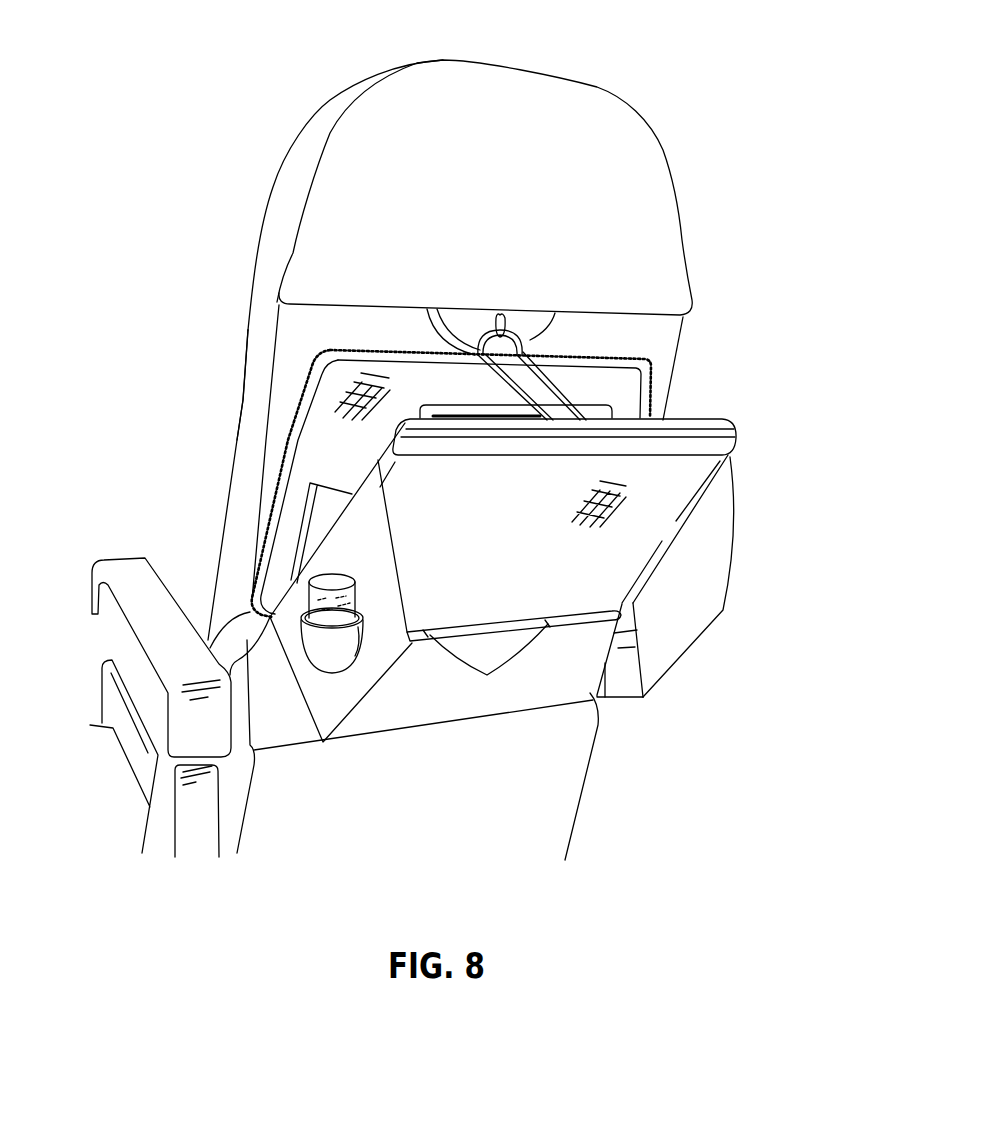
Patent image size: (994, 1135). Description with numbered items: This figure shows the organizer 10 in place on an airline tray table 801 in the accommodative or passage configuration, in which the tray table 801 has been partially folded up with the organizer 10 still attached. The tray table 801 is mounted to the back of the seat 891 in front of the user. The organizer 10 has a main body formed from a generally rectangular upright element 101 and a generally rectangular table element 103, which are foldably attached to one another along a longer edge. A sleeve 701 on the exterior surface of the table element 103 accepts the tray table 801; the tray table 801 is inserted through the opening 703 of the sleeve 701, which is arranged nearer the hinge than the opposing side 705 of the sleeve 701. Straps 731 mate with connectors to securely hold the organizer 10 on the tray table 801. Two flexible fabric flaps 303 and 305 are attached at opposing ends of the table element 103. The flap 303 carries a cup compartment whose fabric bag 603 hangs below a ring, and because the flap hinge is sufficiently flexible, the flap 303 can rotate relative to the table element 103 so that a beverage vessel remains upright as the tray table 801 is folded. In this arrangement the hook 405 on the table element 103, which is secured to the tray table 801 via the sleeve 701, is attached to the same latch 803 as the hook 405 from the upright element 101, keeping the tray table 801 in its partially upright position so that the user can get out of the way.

The organizer 10 is at (282, 378).
The upright element 101 is at (639, 378).
The table element 103 is at (700, 416).
The flap 303 is at (696, 632).
The flap 305 is at (365, 668).
The hook 405 is at (538, 356).
The fabric bag 603 is at (327, 655).
The sleeve 701 is at (510, 590).
The opening 703 is at (577, 623).
The opposing side 705 is at (566, 455).
The straps 731 is at (489, 662).
The tray table 801 is at (652, 445).
The latch 803 is at (499, 317).
The seat 891 is at (462, 58).